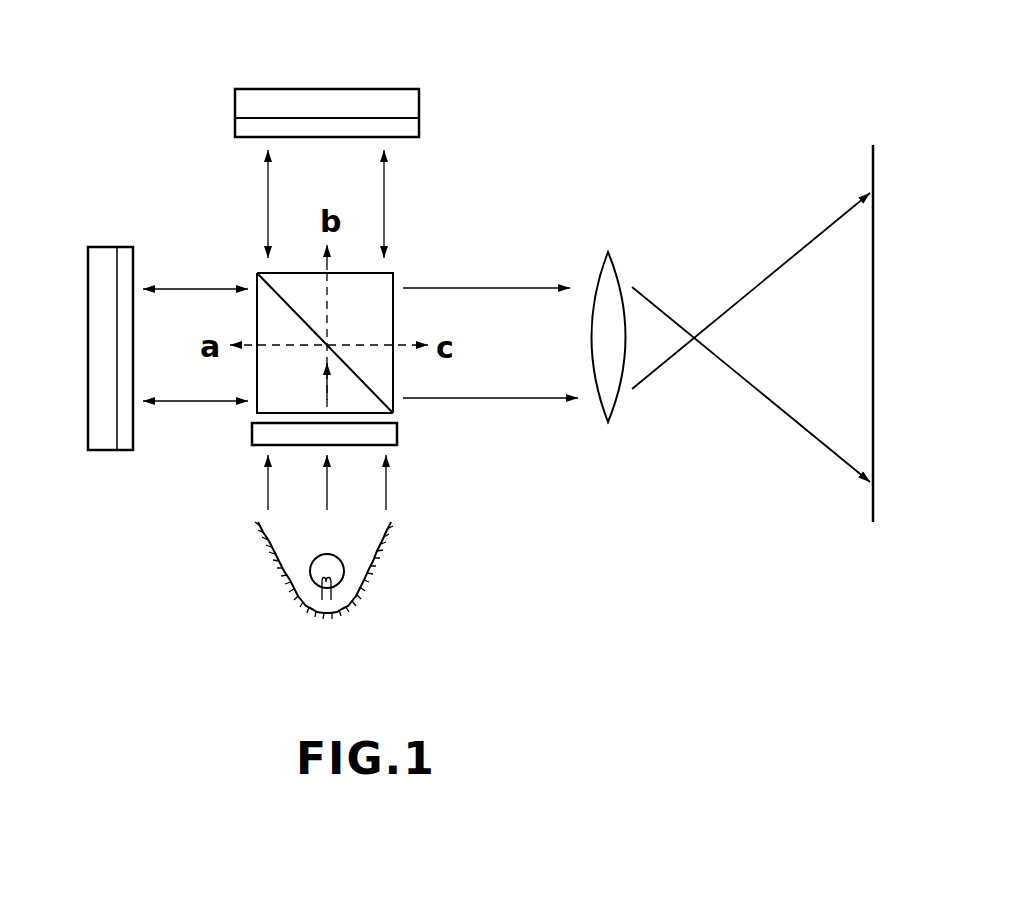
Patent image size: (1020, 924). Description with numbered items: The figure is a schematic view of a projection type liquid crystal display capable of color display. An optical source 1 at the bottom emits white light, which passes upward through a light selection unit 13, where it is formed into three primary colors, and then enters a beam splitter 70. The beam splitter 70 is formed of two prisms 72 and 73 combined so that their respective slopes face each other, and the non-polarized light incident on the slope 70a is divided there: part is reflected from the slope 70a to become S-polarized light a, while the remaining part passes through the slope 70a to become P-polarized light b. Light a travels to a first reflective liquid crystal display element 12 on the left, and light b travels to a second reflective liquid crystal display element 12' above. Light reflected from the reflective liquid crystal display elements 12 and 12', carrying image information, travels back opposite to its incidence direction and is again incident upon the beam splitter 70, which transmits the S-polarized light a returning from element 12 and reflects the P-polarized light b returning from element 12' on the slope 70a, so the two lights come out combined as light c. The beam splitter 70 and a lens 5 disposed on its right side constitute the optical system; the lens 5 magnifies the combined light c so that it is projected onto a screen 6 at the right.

The optical source 1 is at (355, 590).
The lens 5 is at (612, 258).
The screen 6 is at (872, 170).
The first reflective liquid crystal display element 12 is at (80, 372).
The second reflective liquid crystal display element 12' is at (347, 79).
The light selection unit 13 is at (247, 447).
The beam splitter 70 is at (393, 413).
The slope 70a is at (268, 283).
The first prism 72 is at (257, 283).
The second prism 73 is at (383, 288).